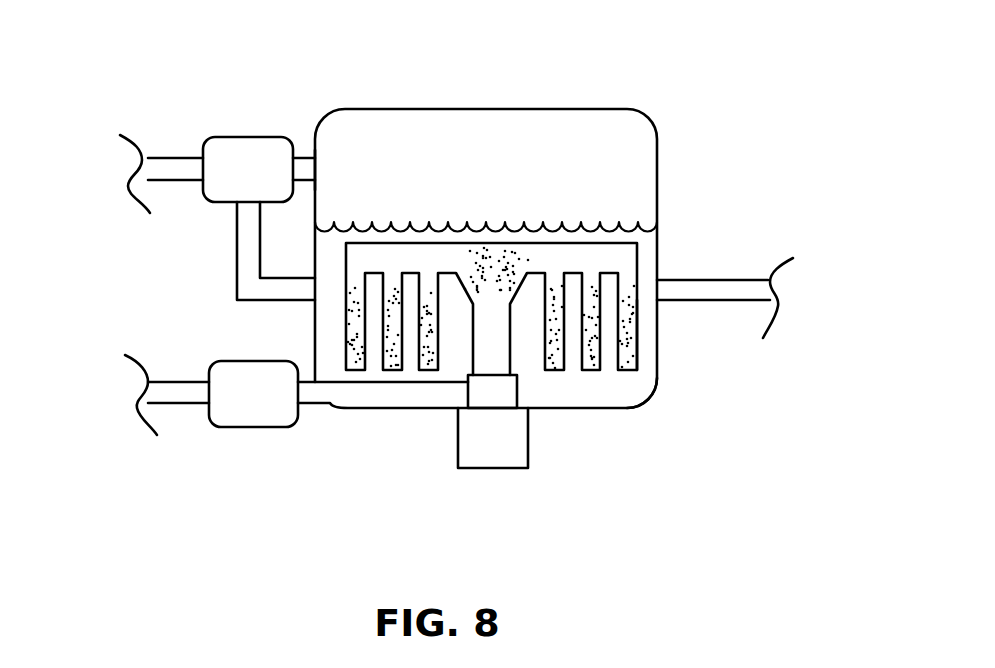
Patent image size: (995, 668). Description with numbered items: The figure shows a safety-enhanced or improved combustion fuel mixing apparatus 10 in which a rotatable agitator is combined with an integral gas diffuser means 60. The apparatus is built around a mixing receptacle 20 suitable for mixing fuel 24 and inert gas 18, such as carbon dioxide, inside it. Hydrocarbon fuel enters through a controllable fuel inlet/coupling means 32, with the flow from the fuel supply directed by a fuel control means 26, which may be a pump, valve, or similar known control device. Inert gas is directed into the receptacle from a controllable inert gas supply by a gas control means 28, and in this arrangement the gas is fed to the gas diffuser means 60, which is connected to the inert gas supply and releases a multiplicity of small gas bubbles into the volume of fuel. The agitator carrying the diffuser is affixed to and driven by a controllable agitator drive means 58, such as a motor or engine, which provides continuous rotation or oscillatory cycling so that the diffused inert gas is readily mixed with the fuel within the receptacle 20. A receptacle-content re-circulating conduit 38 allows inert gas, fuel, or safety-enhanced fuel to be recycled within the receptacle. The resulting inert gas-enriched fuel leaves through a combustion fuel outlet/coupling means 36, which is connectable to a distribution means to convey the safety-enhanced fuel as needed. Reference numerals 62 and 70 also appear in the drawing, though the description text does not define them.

The mixing apparatus 10 is at (754, 146).
The inert gas 18 is at (592, 153).
The mixing receptacle 20 is at (646, 402).
The fuel 24 is at (647, 323).
The fuel control means 26 is at (237, 137).
The gas control means 28 is at (237, 428).
The fuel inlet/coupling means 32 is at (315, 168).
The combustion fuel outlet/coupling means 36 is at (762, 288).
The receptacle-content re-circulating conduit 38 is at (307, 288).
The agitator drive means 58 is at (468, 454).
The gas diffuser means 60 is at (623, 262).
The nozzle base 62 is at (508, 395).
The bottom channel 70 is at (357, 390).